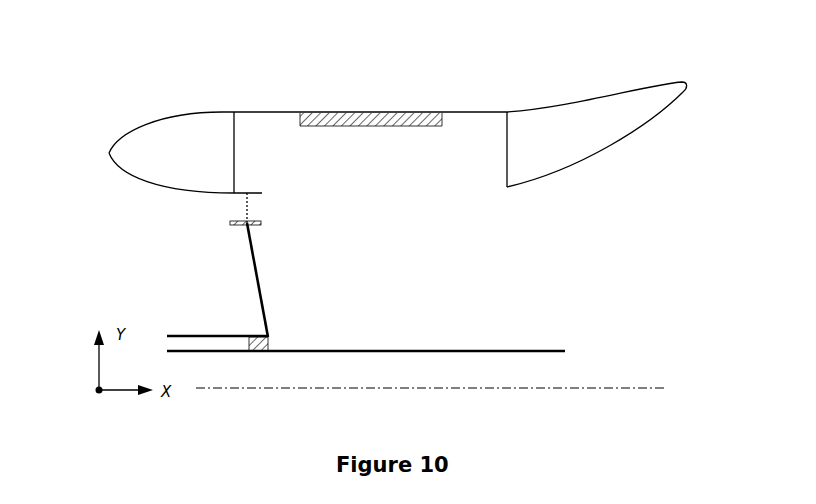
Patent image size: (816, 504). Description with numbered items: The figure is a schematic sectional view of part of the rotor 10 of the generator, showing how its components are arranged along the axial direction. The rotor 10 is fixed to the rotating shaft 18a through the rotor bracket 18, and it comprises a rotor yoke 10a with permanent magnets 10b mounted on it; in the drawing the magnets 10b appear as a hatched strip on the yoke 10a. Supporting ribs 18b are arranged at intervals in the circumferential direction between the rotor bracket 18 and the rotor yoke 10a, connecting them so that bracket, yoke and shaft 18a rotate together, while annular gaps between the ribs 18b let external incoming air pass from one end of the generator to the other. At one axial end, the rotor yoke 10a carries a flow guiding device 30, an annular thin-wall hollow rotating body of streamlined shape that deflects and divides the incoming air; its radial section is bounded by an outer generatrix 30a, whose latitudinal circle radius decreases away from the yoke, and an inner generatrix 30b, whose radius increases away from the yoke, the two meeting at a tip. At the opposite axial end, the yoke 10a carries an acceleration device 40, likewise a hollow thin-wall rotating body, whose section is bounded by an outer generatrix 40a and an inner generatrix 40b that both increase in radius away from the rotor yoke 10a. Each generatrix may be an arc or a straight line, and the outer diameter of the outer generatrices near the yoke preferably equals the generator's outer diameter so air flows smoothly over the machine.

The rotor 10 is at (382, 110).
The rotor yoke 10a is at (270, 112).
The permanent magnets 10b is at (408, 126).
The rotor bracket 18 is at (345, 272).
The rotating shaft 18a is at (210, 331).
The supporting ribs 18b is at (242, 202).
The flow guiding device 30 is at (165, 133).
The outer generatrix 30a is at (217, 111).
The inner generatrix 30b is at (163, 183).
The acceleration device 40 is at (601, 128).
The outer generatrix 40a is at (618, 93).
The inner generatrix 40b is at (567, 177).